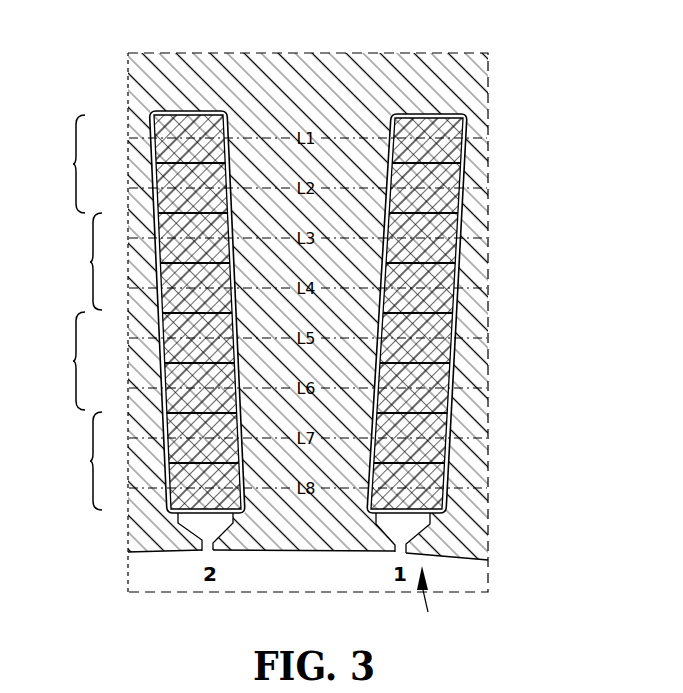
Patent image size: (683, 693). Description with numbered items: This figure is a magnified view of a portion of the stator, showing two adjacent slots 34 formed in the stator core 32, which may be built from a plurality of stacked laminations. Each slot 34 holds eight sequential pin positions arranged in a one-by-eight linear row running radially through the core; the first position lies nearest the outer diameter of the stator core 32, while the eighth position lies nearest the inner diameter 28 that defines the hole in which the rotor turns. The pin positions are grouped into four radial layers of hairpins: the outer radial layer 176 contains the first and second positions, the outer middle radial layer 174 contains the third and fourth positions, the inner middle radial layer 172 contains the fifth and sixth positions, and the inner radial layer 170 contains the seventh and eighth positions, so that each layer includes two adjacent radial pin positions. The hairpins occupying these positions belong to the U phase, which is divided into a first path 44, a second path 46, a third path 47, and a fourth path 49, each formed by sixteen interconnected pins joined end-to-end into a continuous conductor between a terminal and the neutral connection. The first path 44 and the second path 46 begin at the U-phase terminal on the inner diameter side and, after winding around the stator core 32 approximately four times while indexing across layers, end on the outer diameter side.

The inner diameter 28 is at (312, 552).
The stator core 32 is at (305, 87).
The slot 34 is at (428, 612).
The first path 44 is at (453, 503).
The second path 46 is at (165, 480).
The third path 47 is at (440, 478).
The fourth path 49 is at (155, 495).
The inner radial layer 170 is at (77, 461).
The inner middle radial layer 172 is at (58, 361).
The outer middle radial layer 174 is at (77, 261).
The outer radial layer 176 is at (58, 164).